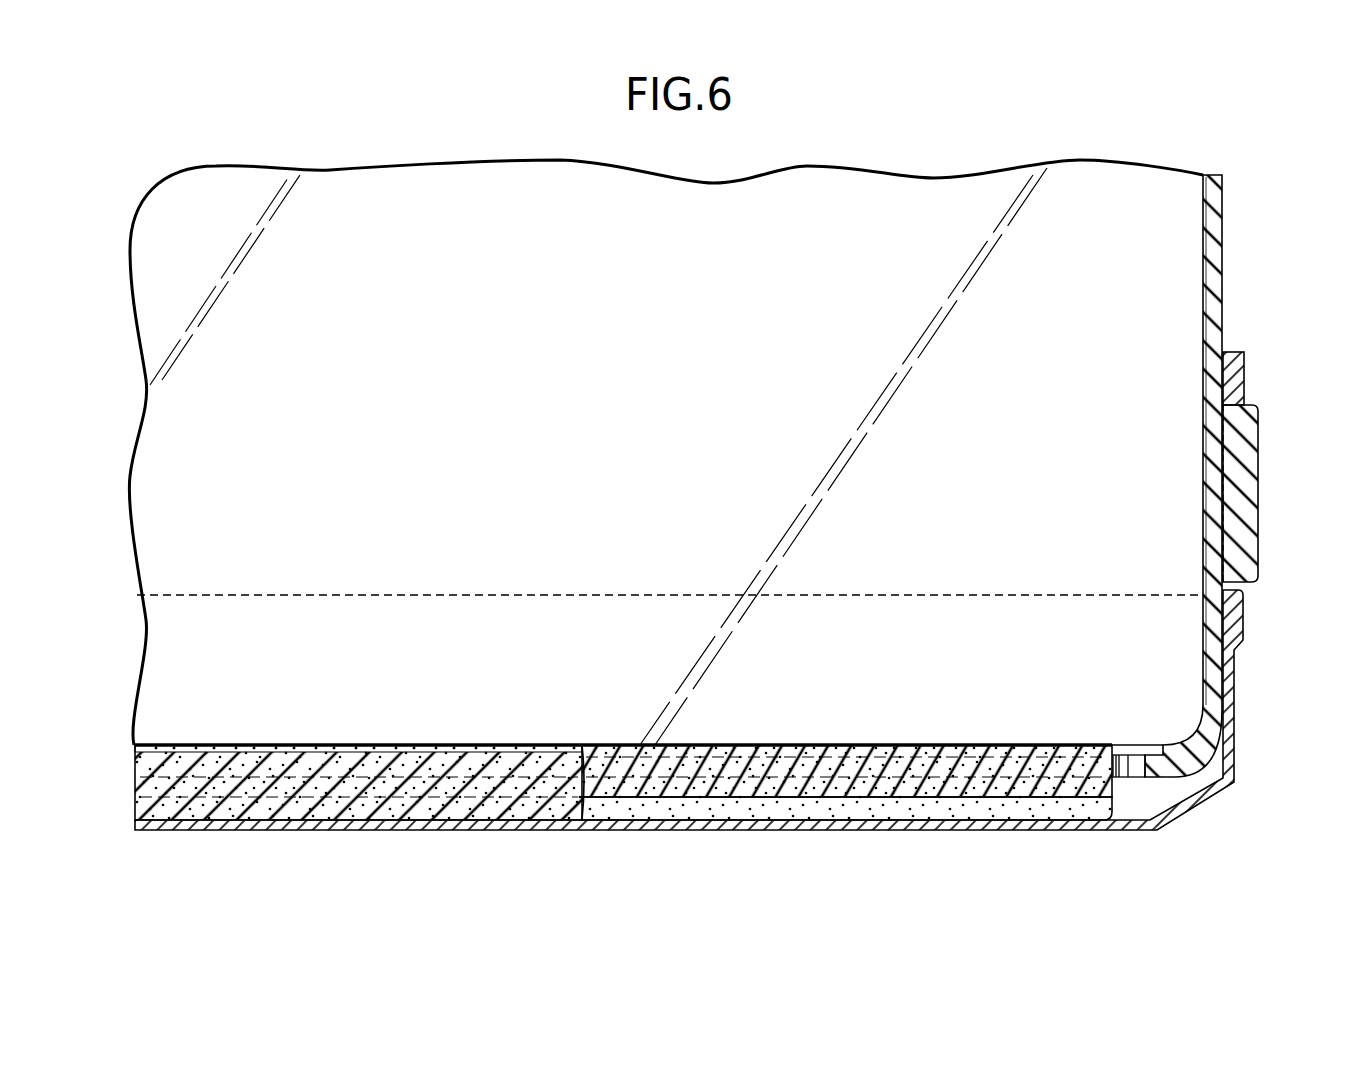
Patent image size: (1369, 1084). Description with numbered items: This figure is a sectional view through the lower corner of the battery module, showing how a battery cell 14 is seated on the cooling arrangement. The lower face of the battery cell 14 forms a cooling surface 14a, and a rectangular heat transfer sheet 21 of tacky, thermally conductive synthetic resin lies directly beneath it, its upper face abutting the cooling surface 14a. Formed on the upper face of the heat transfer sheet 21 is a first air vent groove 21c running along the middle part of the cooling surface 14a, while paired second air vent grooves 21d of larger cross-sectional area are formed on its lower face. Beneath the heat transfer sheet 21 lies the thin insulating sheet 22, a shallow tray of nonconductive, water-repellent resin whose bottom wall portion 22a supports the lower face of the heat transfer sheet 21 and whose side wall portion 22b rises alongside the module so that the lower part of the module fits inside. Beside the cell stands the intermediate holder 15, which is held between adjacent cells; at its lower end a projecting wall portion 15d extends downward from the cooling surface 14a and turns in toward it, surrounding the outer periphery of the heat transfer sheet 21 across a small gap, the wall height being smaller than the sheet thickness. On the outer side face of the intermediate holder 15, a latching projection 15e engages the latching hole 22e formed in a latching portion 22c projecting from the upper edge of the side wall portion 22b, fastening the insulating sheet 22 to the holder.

The battery cell 14 is at (656, 443).
The cooling surface 14a is at (800, 760).
The intermediate holder 15 is at (1232, 240).
The projecting wall portion 15d is at (1165, 757).
The latching projection 15e is at (1260, 484).
The heat transfer sheet 21 is at (606, 737).
The first air vent groove 21c is at (213, 748).
The second air vent groove 21d is at (883, 797).
The insulating sheet 22 is at (1222, 819).
The bottom wall portion 22a is at (510, 830).
The side wall portion 22b is at (1236, 697).
The latching portion 22c is at (1246, 376).
The latching hole 22e is at (1243, 598).